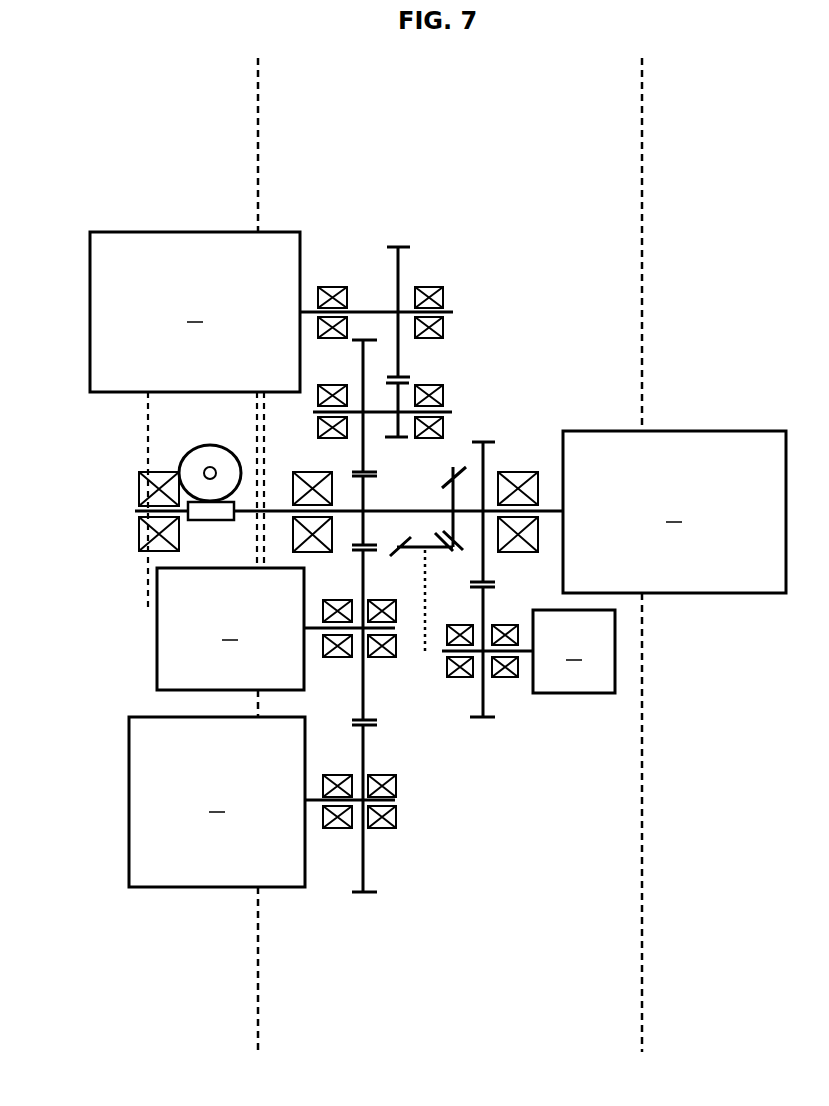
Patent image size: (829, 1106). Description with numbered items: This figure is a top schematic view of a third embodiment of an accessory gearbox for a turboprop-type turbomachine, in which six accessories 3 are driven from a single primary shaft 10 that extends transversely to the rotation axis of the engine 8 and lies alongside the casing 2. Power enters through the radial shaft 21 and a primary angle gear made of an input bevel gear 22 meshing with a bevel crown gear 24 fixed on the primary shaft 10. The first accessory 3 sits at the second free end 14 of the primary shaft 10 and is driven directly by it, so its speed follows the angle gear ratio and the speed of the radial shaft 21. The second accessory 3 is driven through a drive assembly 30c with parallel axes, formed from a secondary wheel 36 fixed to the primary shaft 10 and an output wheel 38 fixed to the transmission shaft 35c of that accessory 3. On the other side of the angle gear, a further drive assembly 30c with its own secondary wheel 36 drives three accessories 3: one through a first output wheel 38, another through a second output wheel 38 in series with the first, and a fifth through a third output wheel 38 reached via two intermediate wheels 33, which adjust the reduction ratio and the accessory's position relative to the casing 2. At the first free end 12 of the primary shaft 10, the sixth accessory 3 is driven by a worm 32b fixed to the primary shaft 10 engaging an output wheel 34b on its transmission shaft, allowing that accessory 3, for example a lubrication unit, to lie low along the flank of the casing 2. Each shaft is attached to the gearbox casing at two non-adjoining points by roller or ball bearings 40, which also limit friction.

The casing 2 is at (258, 107).
The accessory 3 is at (178, 435).
The engine 8 is at (155, 136).
The primary shaft 10 is at (402, 510).
The first free end 12 is at (247, 514).
The second free end 14 is at (552, 510).
The radial shaft 21 is at (422, 638).
The input bevel gear 22 is at (392, 556).
The bevel crown gear 24 is at (455, 465).
The drive assembly with parallel axes 30c is at (512, 246).
The worm 32b is at (213, 518).
The intermediate wheel 33 is at (400, 475).
The output wheel 34b is at (210, 457).
The transmission shaft 35c is at (360, 311).
The secondary wheel 36 is at (362, 492).
The output wheel 38 is at (397, 880).
The bearing 40 is at (397, 818).